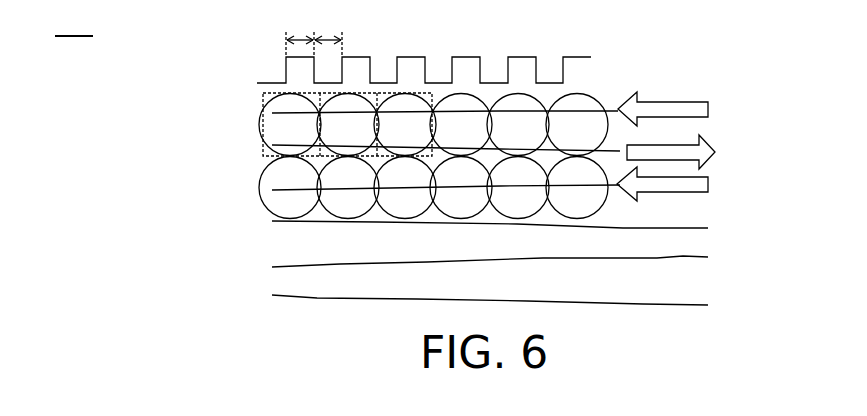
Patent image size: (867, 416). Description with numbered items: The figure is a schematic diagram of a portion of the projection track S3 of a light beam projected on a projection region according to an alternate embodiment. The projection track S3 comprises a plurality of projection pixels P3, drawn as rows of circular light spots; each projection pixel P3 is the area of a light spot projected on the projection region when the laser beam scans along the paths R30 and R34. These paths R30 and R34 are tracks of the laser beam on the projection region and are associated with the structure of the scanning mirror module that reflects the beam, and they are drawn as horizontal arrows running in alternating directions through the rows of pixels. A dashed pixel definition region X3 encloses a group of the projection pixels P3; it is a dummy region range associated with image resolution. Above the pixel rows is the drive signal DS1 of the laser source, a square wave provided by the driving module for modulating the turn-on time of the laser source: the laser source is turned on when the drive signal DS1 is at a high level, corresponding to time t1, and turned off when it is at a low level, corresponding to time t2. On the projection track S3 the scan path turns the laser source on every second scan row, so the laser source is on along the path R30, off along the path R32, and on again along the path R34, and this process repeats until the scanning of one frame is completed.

The projection track S3 is at (74, 22).
The drive signal DS1 is at (577, 57).
The time t1 is at (300, 31).
The time t2 is at (328, 31).
The projection pixel P3 is at (280, 106).
The pixel definition region X3 is at (262, 153).
The path R30 is at (519, 124).
The path R32 is at (519, 152).
The path R34 is at (513, 188).